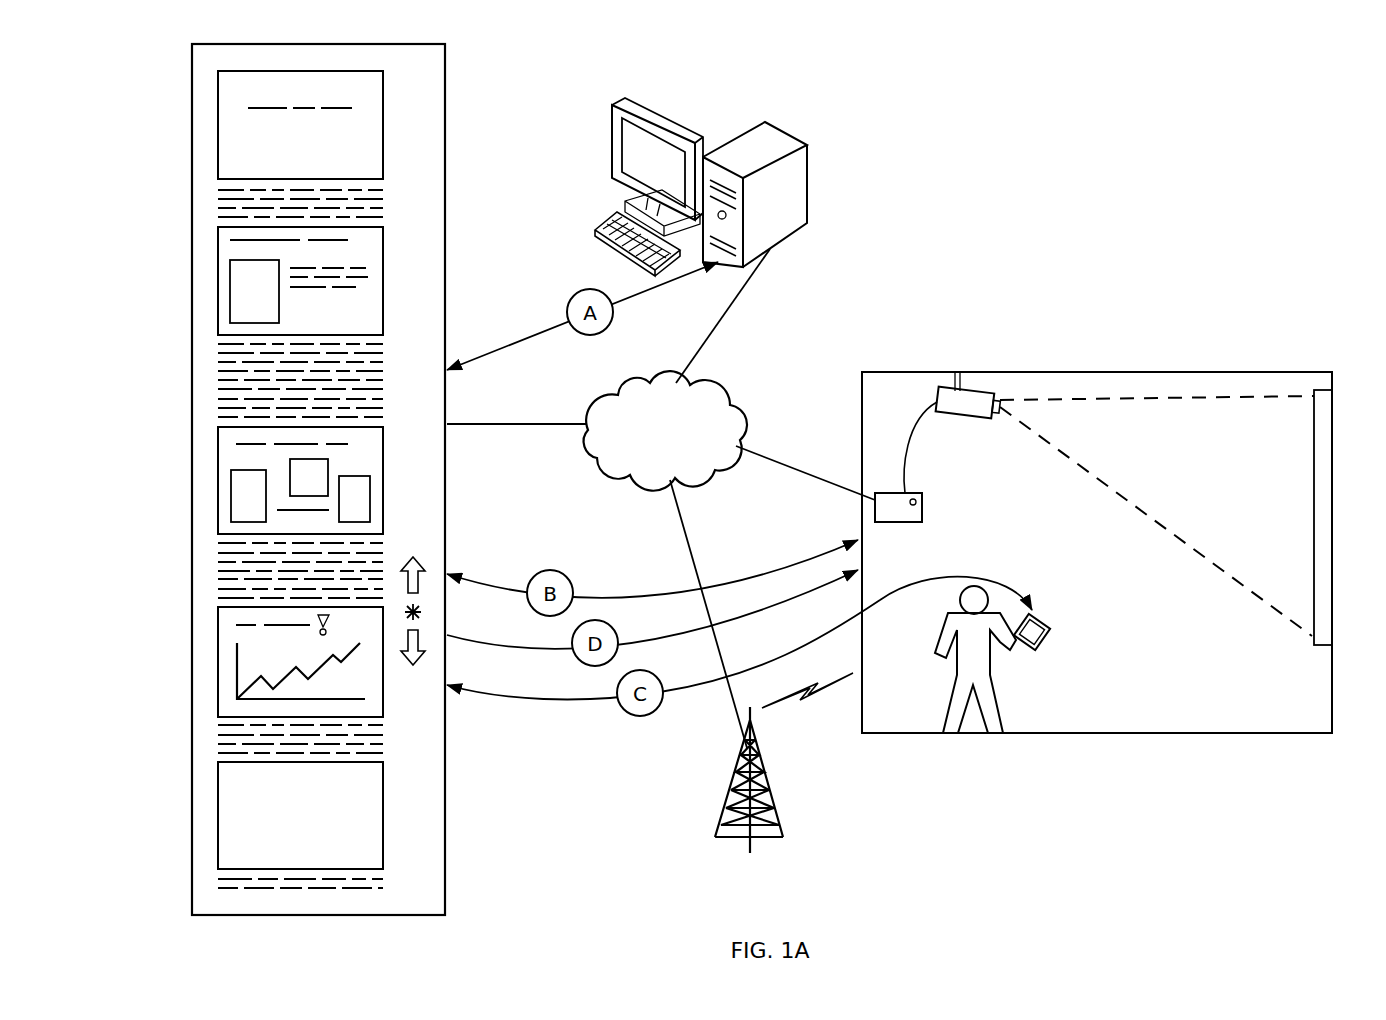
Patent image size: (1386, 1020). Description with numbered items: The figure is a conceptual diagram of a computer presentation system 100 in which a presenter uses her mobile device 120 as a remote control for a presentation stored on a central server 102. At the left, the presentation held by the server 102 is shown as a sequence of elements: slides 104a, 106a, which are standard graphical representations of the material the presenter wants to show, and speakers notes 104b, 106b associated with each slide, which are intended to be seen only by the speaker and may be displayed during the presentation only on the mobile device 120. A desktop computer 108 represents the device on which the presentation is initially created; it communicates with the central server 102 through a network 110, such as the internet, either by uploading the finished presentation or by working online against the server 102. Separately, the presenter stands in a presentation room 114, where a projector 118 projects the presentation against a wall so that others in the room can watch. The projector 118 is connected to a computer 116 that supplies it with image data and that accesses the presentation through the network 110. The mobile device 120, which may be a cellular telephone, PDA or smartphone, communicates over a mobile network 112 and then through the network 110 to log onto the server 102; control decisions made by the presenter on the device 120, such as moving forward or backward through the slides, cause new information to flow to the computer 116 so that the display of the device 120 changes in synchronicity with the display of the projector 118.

The system 100 is at (1300, 97).
The central server 102 is at (446, 79).
The slide 104a is at (218, 135).
The speakers notes 104b is at (218, 190).
The slide 106a is at (218, 671).
The speakers notes 106b is at (218, 725).
The desktop computer 108 is at (701, 187).
The network 110 is at (665, 431).
The mobile network 112 is at (733, 791).
The presentation room 114 is at (1118, 372).
The computer 116 is at (922, 510).
The projector 118 is at (955, 413).
The mobile device 120 is at (1043, 645).